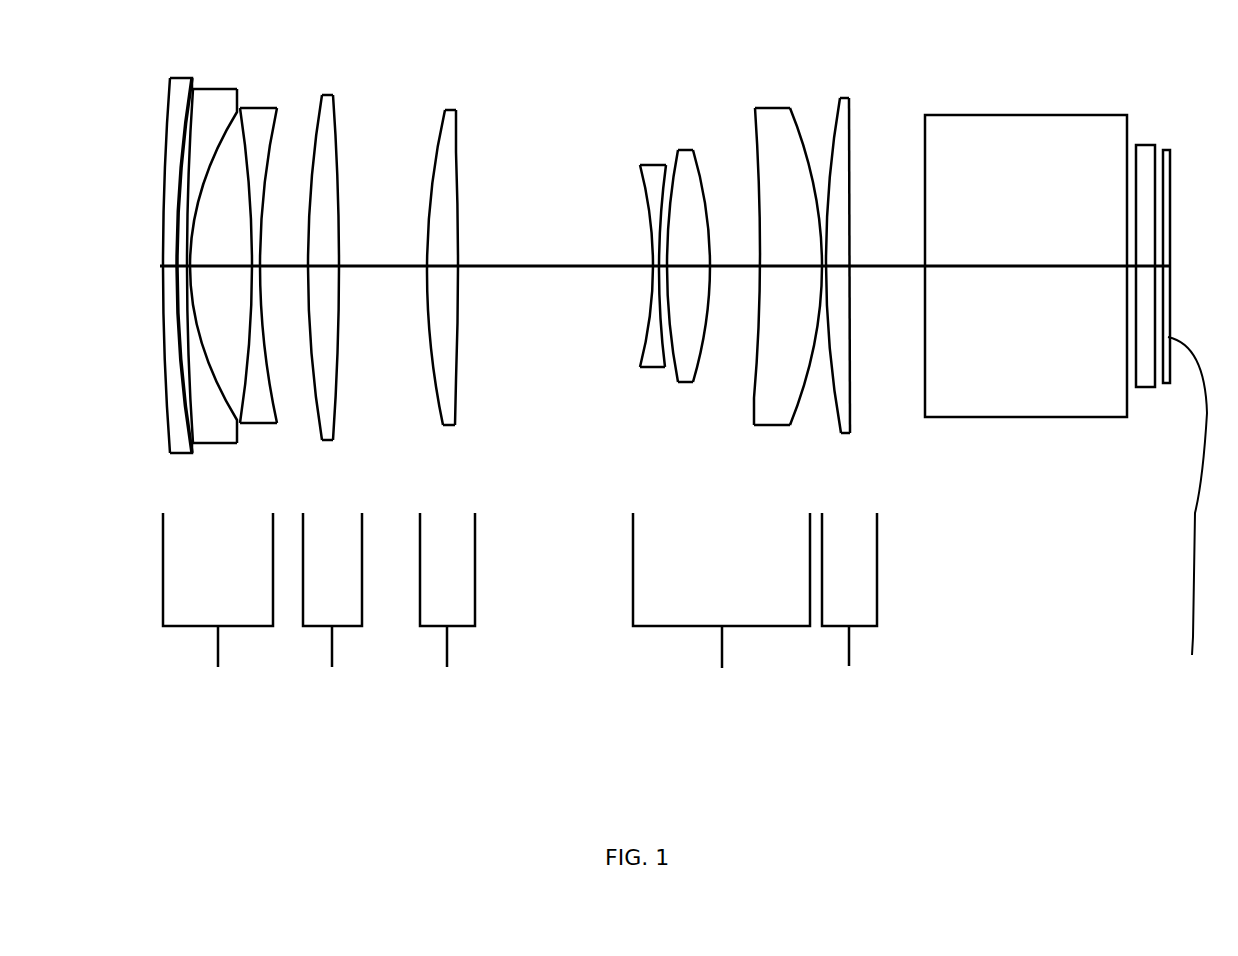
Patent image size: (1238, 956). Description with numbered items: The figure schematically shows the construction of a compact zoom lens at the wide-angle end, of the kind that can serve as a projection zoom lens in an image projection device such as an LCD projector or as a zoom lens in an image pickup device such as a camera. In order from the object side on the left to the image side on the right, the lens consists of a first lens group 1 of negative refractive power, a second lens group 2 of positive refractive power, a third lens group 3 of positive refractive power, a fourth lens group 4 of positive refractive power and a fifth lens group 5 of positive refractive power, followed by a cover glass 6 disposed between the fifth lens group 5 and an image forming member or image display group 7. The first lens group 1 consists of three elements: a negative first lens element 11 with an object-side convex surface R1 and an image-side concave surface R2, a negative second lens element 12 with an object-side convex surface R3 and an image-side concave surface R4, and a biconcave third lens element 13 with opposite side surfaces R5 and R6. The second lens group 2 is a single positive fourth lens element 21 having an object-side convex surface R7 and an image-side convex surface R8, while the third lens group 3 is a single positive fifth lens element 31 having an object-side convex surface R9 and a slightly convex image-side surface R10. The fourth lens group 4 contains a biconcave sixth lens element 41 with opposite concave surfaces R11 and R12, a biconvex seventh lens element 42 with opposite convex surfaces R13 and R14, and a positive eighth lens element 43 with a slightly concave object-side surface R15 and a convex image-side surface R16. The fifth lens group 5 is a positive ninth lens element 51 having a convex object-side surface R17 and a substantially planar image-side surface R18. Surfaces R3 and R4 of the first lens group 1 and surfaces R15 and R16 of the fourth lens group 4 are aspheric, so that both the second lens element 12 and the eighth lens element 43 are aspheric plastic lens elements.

The first lens group 1 is at (214, 372).
The first lens element 11 is at (138, 302).
The second lens element 12 is at (161, 307).
The third lens element 13 is at (292, 282).
The second lens group 2 is at (354, 404).
The fourth lens element 21 is at (356, 303).
The third lens group 3 is at (486, 399).
The fifth lens element 31 is at (489, 295).
The fourth lens group 4 is at (714, 368).
The sixth lens element 41 is at (615, 307).
The seventh lens element 42 is at (674, 275).
The eighth lens element 43 is at (807, 261).
The fifth lens group 5 is at (910, 379).
The ninth lens element 51 is at (912, 275).
The cover glass 6 is at (1143, 388).
The image display group 7 is at (1185, 423).
The object-side convex surface R1 is at (163, 247).
The image-side concave surface R2 is at (175, 303).
The object-side convex surface R3 is at (190, 138).
The image-side concave surface R4 is at (202, 360).
The object-side surface R5 is at (257, 222).
The image-side surface R6 is at (261, 218).
The object-side convex surface R7 is at (313, 180).
The image-side convex surface R8 is at (340, 203).
The object-side convex surface R9 is at (433, 180).
The slightly convex image-side surface R10 is at (458, 225).
The concave object-side surface R11 is at (650, 247).
The concave image-side surface R12 is at (660, 215).
The convex object-side surface R13 is at (661, 220).
The convex image-side surface R14 is at (706, 177).
The slightly concave object-side surface R15 is at (760, 207).
The convex image-side surface R16 is at (803, 153).
The convex object-side surface R17 is at (838, 157).
The substantially planar image-side surface R18 is at (850, 190).